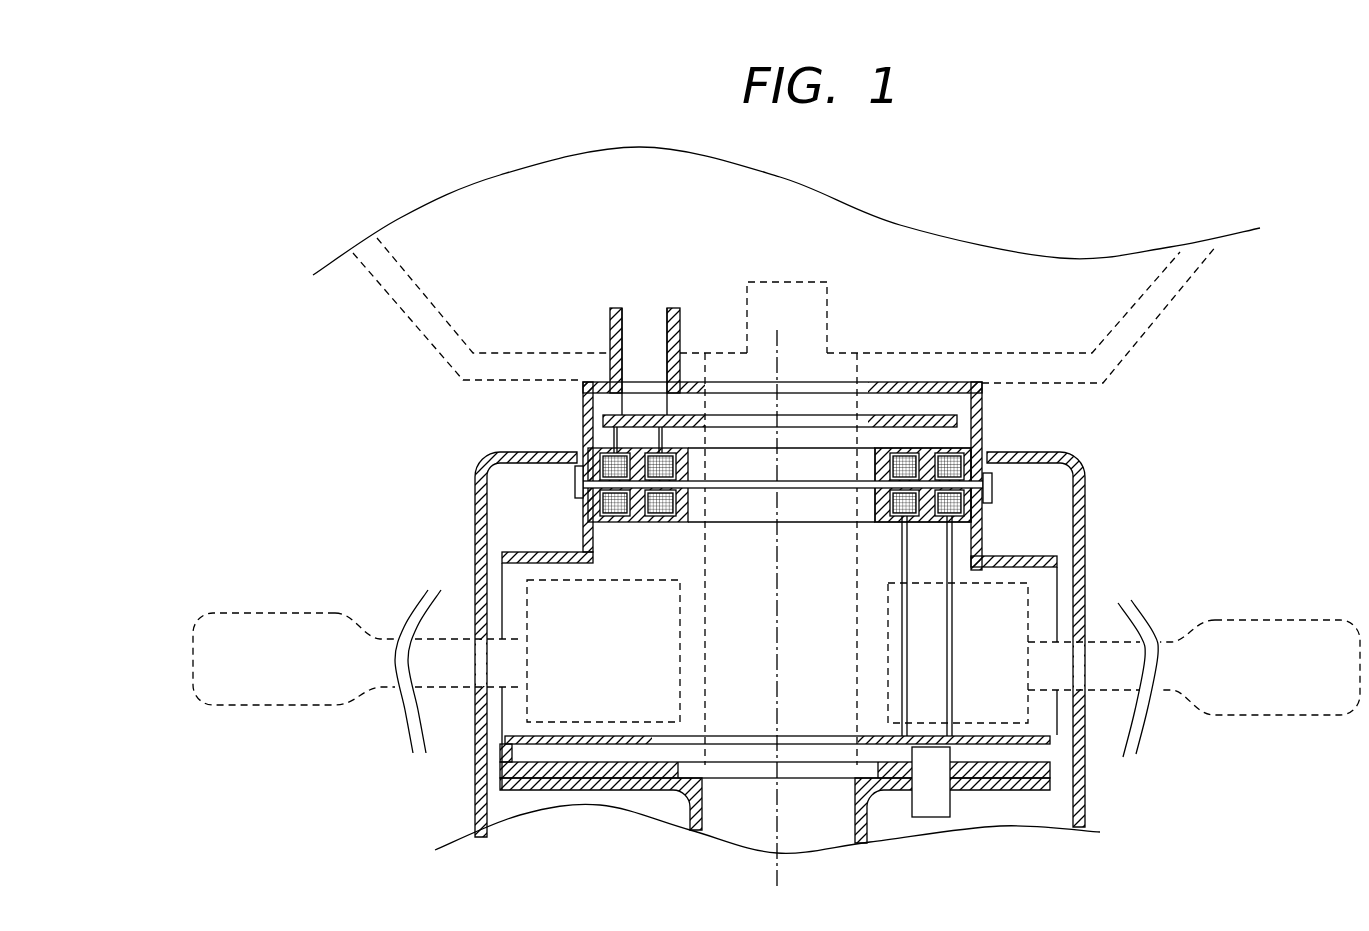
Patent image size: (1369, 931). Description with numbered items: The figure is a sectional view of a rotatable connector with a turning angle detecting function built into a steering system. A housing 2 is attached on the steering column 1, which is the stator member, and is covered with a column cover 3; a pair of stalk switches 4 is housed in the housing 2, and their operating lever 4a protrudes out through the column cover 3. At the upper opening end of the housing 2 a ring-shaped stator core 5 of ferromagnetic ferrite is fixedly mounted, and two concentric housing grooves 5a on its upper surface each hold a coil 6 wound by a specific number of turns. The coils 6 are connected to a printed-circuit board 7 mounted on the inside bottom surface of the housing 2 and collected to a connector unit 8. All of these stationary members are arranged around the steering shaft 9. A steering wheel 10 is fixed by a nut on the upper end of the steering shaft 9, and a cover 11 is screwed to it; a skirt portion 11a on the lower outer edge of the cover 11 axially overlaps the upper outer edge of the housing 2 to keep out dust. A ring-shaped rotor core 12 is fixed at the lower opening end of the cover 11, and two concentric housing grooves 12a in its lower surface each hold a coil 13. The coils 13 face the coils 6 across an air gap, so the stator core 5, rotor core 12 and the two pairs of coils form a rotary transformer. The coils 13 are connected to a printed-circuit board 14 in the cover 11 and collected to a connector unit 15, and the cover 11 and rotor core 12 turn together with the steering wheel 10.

The steering column 1 is at (1000, 792).
The housing 2 is at (1030, 553).
The column cover 3 is at (475, 500).
The stalk switches 4 is at (615, 724).
The operating lever 4a is at (293, 707).
The stator core 5 is at (963, 510).
The housing grooves 5a is at (893, 495).
The coils 6 is at (938, 517).
The printed-circuit board 7 is at (540, 745).
The connector unit 8 is at (935, 818).
The steering shaft 9 is at (702, 722).
The steering wheel 10 is at (1168, 305).
The cover 11 is at (583, 418).
The skirt portion 11a is at (993, 485).
The rotor core 12 is at (984, 447).
The housing grooves 12a is at (893, 462).
The coils 13 is at (908, 455).
The printed-circuit board 14 is at (892, 414).
The connector unit 15 is at (640, 318).